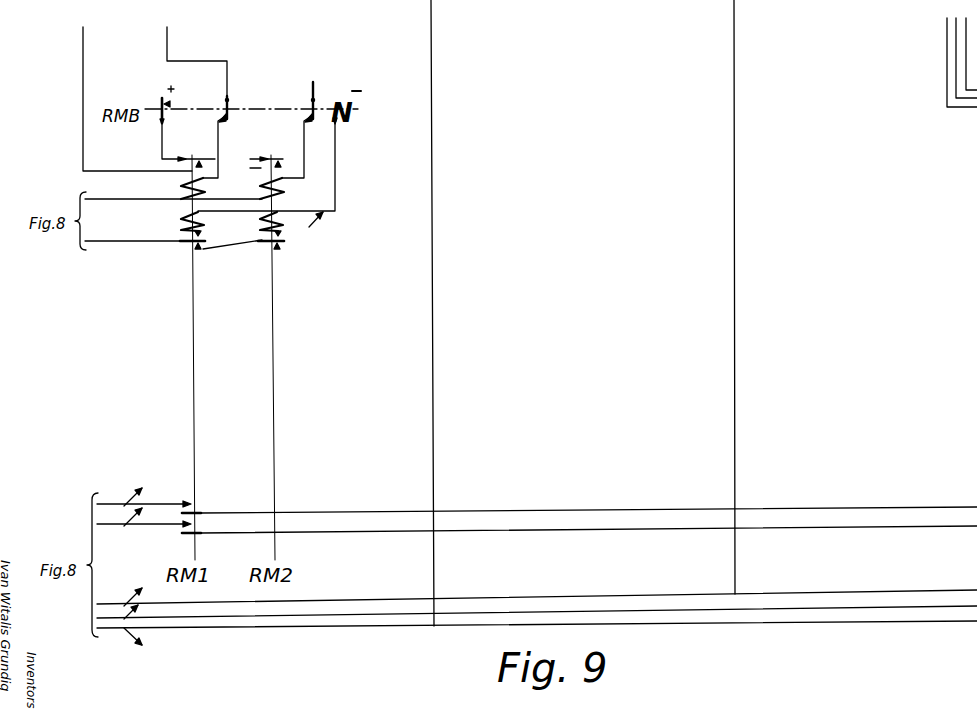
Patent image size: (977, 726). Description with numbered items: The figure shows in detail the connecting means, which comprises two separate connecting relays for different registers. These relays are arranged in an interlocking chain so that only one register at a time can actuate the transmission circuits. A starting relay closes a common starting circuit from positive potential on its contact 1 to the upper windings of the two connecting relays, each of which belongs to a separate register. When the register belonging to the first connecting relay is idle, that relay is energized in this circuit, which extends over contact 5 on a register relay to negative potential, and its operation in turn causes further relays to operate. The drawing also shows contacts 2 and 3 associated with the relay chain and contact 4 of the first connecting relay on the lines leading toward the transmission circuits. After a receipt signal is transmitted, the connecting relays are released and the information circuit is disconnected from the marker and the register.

The contact 1 is at (226, 129).
The second contact / transistor 2 is at (244, 166).
The third contact / transistor 3 is at (199, 171).
The contact 4 of relay RM1 4 is at (579, 504).
The contact 5 is at (579, 524).